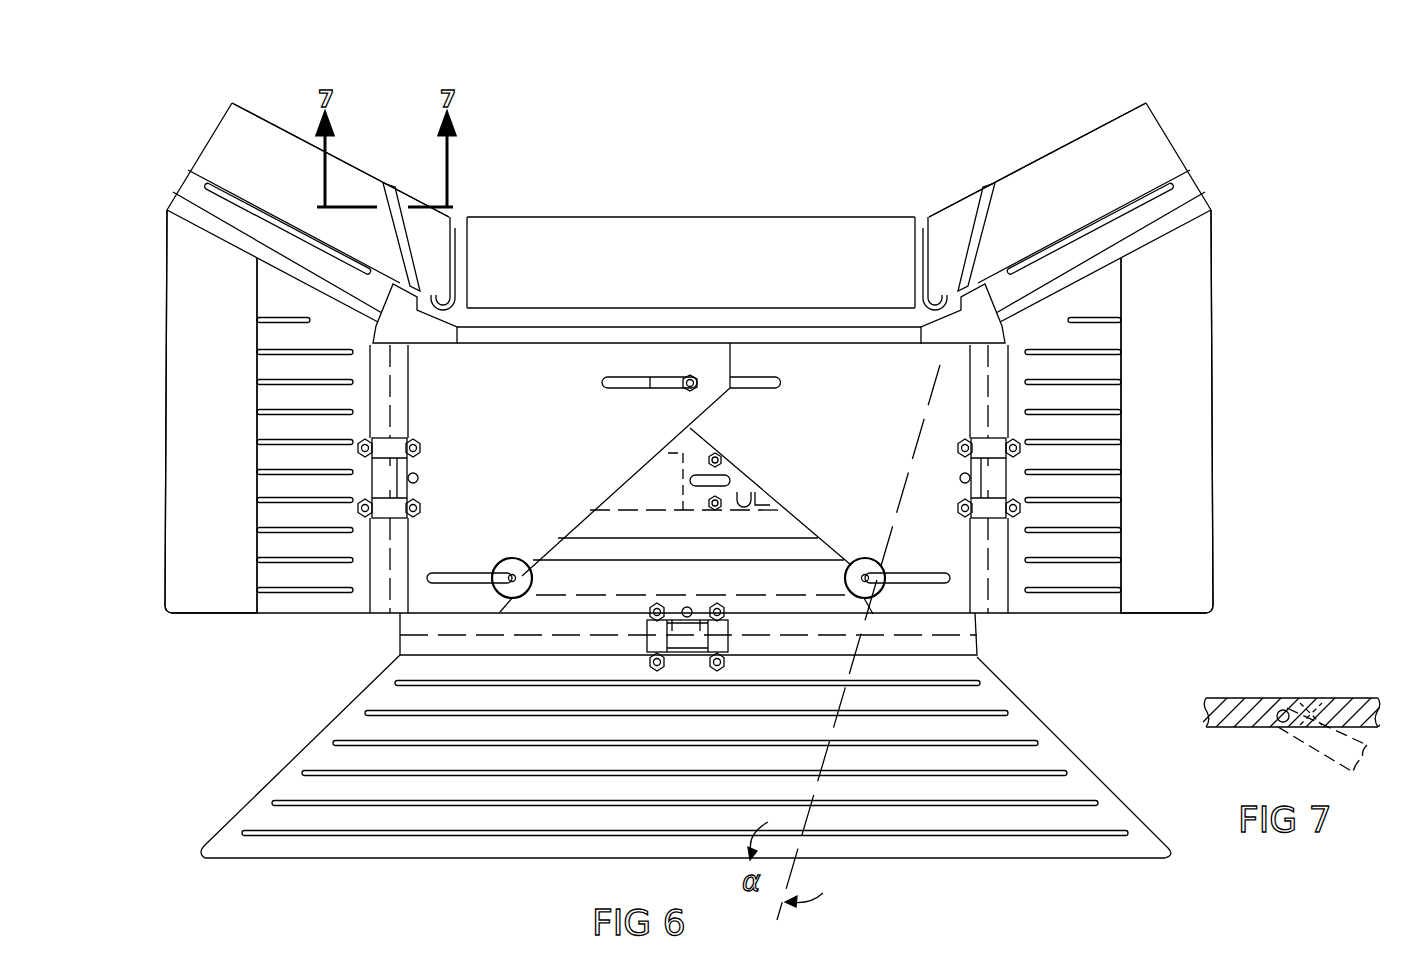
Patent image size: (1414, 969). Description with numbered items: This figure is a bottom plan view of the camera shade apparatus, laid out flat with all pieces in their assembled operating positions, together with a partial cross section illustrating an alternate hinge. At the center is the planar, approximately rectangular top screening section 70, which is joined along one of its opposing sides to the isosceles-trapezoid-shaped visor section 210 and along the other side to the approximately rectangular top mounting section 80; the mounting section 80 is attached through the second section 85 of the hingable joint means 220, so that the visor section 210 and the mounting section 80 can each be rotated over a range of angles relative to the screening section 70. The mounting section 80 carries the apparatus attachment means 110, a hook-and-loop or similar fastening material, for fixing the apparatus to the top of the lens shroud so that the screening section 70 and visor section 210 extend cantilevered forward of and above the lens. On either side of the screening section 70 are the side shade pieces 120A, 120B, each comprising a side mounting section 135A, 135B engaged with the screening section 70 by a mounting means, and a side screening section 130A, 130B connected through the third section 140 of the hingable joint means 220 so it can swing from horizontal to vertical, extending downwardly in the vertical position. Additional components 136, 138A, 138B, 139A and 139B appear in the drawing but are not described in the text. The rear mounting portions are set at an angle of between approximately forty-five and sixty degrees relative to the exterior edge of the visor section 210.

The top screening section 70 is at (657, 553).
The top mounting section 80 is at (671, 216).
The second section of hingable joint means 85 is at (948, 347).
The apparatus attachment means 110 is at (788, 216).
The side shade piece 120A is at (1111, 362).
The side shade piece 120B is at (306, 392).
The side screening section 130A is at (1213, 426).
The side screening section 130B is at (165, 412).
The side mounting section 135A is at (791, 521).
The side mounting section 135B is at (608, 477).
The bracket 136 is at (440, 344).
The right slide bolt 138A is at (770, 388).
The left slide bolt 138B is at (612, 392).
The right pivot roller 139A is at (912, 573).
The left pivot roller 139B is at (435, 574).
The third section of hingable joint means 140 is at (993, 617).
The visor section 210 is at (383, 858).
The hingable joint means 220 is at (398, 635).